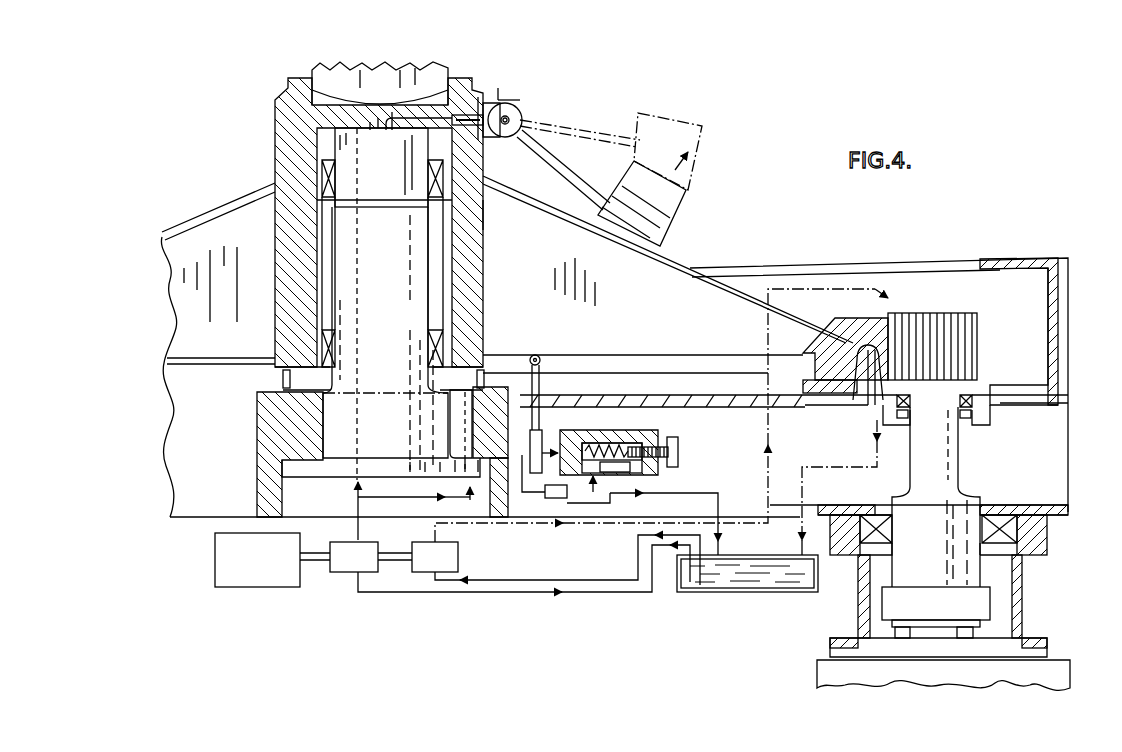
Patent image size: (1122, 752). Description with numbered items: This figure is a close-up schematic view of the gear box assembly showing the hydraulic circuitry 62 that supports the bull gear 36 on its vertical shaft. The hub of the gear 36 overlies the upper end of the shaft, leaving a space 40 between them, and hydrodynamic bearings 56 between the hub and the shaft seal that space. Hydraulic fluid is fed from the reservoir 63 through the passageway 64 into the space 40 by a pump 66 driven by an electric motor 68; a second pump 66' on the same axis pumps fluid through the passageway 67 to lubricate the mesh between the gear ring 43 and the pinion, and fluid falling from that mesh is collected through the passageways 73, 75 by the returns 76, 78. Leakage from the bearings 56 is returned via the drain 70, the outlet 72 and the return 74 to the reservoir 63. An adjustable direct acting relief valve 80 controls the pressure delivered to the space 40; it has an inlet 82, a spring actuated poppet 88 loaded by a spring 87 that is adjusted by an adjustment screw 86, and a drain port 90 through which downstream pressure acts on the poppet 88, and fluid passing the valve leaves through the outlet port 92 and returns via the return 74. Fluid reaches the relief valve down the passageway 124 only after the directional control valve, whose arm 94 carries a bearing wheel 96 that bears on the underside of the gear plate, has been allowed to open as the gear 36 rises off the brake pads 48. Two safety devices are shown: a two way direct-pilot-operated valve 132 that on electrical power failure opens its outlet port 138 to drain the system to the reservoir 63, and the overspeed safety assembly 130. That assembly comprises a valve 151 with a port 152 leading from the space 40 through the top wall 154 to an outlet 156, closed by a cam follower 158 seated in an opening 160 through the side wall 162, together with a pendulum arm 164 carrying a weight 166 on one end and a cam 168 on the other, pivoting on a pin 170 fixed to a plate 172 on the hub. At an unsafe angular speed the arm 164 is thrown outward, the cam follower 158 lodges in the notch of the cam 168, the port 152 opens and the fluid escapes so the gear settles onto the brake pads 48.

The bull gear 36 is at (218, 195).
The space 40 is at (342, 136).
The hydrodynamic bearings 56 is at (322, 165).
The passageway 64 is at (362, 270).
The valve 151 is at (326, 104).
The port 152 is at (393, 126).
The top wall 154 is at (370, 128).
The cam follower 158 is at (457, 126).
The opening 160 is at (472, 118).
The plate 172 is at (486, 102).
The cam 168 is at (510, 106).
The safety assembly 130 is at (549, 88).
The pendulum arm 164 is at (580, 150).
The weight 166 is at (685, 205).
The pin 170 is at (510, 135).
The outlet 156 is at (487, 145).
The side wall 162 is at (484, 200).
The passageway 124 is at (408, 503).
The outlet 72 is at (470, 500).
The drain 70 is at (473, 412).
The outlet port 92 is at (524, 441).
The bearing wheel 96 is at (540, 362).
The arm 94 is at (540, 393).
The inlet 82 is at (565, 443).
The poppet 88 is at (598, 440).
The spring 87 is at (624, 448).
The adjustment screw 86 is at (679, 452).
The relief valve 80 is at (681, 451).
The drain port 90 is at (640, 472).
The two way direct-pilot-operated valve 132 is at (556, 500).
The outlet port 138 is at (574, 504).
The return 74 is at (708, 490).
The passageway 67 is at (768, 497).
The return 76 is at (873, 434).
The reservoir 63 is at (718, 593).
The hydraulic circuitry 62 is at (203, 544).
The electric motor 68 is at (215, 574).
The pump 66 is at (345, 566).
The pump 66' is at (453, 557).
The gear ring 43 is at (856, 322).
The brake pads 48 is at (845, 400).
The passageway 73 is at (870, 405).
The passageway 75 is at (910, 418).
The return 78 is at (910, 460).